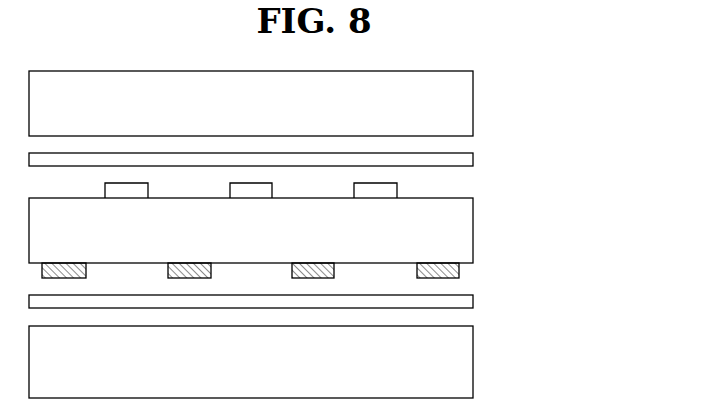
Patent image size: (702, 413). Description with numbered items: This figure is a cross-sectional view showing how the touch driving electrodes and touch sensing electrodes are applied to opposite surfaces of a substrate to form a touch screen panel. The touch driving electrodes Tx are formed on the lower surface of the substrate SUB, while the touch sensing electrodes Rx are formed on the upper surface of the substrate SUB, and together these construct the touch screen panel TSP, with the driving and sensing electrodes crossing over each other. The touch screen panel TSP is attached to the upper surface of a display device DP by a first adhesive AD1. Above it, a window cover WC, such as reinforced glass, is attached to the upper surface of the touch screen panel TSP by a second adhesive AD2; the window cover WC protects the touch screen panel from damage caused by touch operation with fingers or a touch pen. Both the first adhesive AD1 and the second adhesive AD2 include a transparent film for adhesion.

The window cover WC is at (462, 102).
The second adhesive AD2 is at (462, 160).
The touch sensing electrodes Rx is at (388, 187).
The substrate SUB is at (462, 231).
The touch driving electrodes Tx is at (457, 270).
The touch screen panel TSP is at (555, 183).
The first adhesive AD1 is at (462, 303).
The display device DP is at (462, 360).